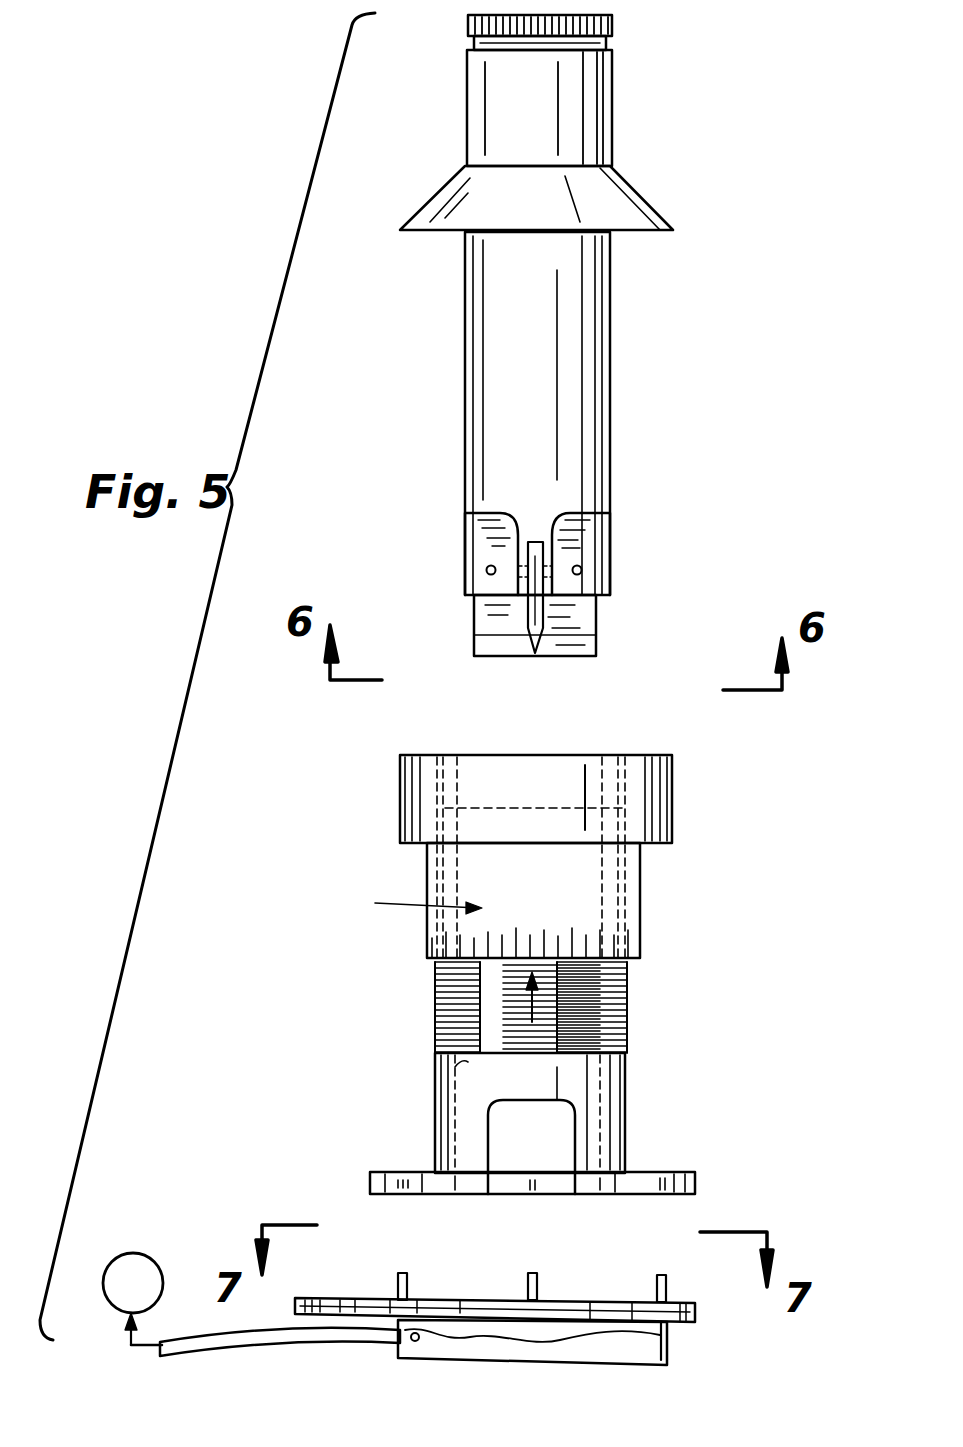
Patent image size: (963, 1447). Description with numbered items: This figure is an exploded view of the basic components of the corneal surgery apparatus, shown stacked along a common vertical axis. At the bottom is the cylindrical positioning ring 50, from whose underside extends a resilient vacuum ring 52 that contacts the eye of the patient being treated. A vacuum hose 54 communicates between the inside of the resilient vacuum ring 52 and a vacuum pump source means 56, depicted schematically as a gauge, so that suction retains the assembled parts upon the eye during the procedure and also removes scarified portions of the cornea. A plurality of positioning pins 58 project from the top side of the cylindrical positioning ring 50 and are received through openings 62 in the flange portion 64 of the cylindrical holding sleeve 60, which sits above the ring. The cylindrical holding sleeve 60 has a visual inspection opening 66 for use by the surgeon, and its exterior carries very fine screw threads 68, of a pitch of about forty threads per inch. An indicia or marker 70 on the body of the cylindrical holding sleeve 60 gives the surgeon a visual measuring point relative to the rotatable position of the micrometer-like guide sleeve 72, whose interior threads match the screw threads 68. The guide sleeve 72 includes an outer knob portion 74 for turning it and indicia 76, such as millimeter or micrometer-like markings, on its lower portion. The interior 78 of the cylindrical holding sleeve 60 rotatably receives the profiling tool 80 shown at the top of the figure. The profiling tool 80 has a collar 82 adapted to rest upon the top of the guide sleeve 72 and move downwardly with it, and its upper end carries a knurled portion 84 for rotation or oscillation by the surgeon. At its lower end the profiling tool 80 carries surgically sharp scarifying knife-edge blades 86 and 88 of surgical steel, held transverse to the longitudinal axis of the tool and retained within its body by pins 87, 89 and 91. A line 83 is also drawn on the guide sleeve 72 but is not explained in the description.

The cylindrical positioning ring 50 is at (555, 1303).
The resilient vacuum ring 52 is at (588, 1362).
The vacuum hose 54 is at (248, 1352).
The vacuum pump source means 56 is at (118, 1305).
The positioning pins 58 is at (532, 1273).
The cylindrical holding sleeve 60 is at (625, 1095).
The openings 62 is at (665, 1175).
The flange portion 64 is at (695, 1190).
The visual inspection opening 66 is at (500, 1125).
The screw threads 68 is at (627, 998).
The indicia or marker 70 is at (525, 1010).
The micrometer-like guide sleeve 72 is at (640, 905).
The outer knob portion 74 is at (672, 790).
The indicia 76 is at (410, 907).
The interior of the cylindrical holding sleeve 78 is at (460, 1066).
The profiling tool 80 is at (610, 398).
The collar 82 is at (650, 234).
The slot 83 is at (585, 765).
The knurled portion 84 is at (612, 30).
The scarifying knife-edge blade 86 is at (596, 633).
The pin 87 is at (577, 570).
The scarifying knife-edge blade 88 is at (535, 630).
The pin 89 is at (491, 570).
The pin 91 is at (600, 520).